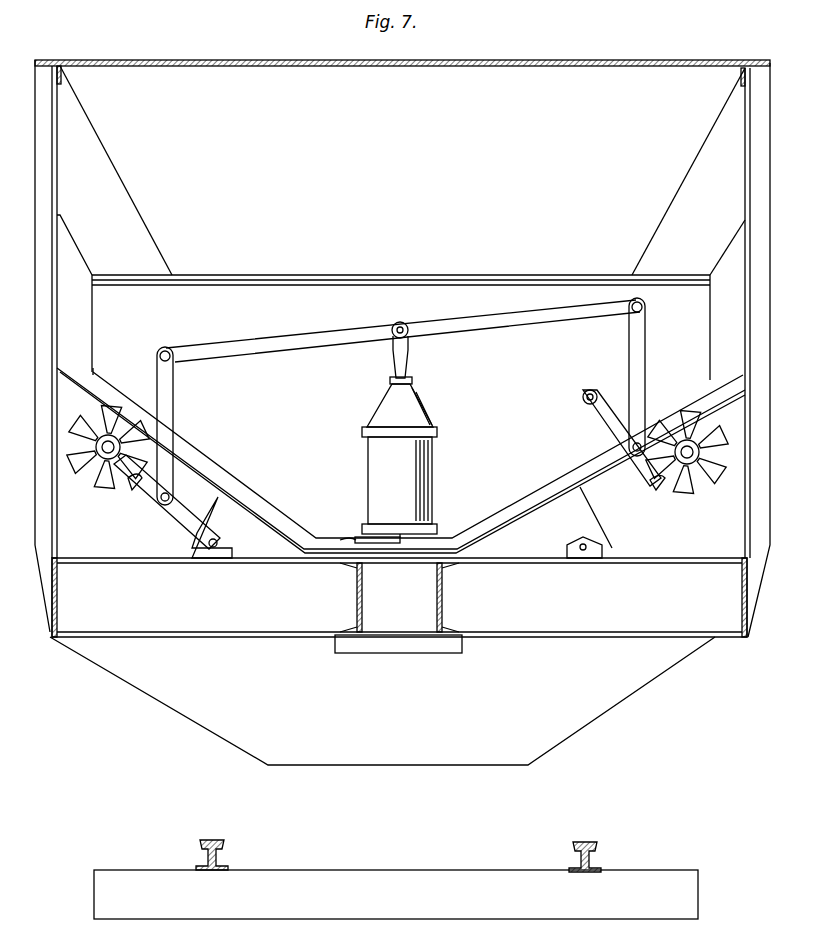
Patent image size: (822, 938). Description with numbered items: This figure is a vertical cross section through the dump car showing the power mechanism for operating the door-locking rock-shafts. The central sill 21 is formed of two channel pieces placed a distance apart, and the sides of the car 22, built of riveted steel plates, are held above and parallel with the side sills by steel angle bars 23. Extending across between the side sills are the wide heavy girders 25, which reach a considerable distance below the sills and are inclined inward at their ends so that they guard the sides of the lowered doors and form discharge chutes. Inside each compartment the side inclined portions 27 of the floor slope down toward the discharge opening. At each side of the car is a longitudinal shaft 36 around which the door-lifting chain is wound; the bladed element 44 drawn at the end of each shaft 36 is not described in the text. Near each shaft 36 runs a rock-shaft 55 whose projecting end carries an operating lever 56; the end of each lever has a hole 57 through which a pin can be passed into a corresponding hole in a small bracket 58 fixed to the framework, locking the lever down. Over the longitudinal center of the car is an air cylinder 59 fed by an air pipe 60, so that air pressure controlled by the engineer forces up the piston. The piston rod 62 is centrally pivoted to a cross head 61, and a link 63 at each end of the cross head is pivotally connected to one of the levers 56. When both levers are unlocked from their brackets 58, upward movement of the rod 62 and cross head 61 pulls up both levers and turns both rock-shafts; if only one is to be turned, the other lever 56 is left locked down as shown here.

The central sill 21 is at (437, 600).
The sides of the car 22 is at (70, 160).
The steel angle bars 23 is at (50, 205).
The girders 25 is at (612, 690).
The side inclined portions of the floor 27 is at (203, 467).
The shaft 36 is at (118, 442).
The fan / agitator blades 44 is at (100, 483).
The rock-shaft 55 is at (130, 495).
The operating lever 56 is at (175, 515).
The hole 57 is at (592, 390).
The bracket 58 is at (235, 555).
The air cylinder 59 is at (423, 472).
The air pipe 60 is at (356, 540).
The cross head 61 is at (505, 326).
The rod 62 is at (406, 366).
The link 63 is at (167, 397).